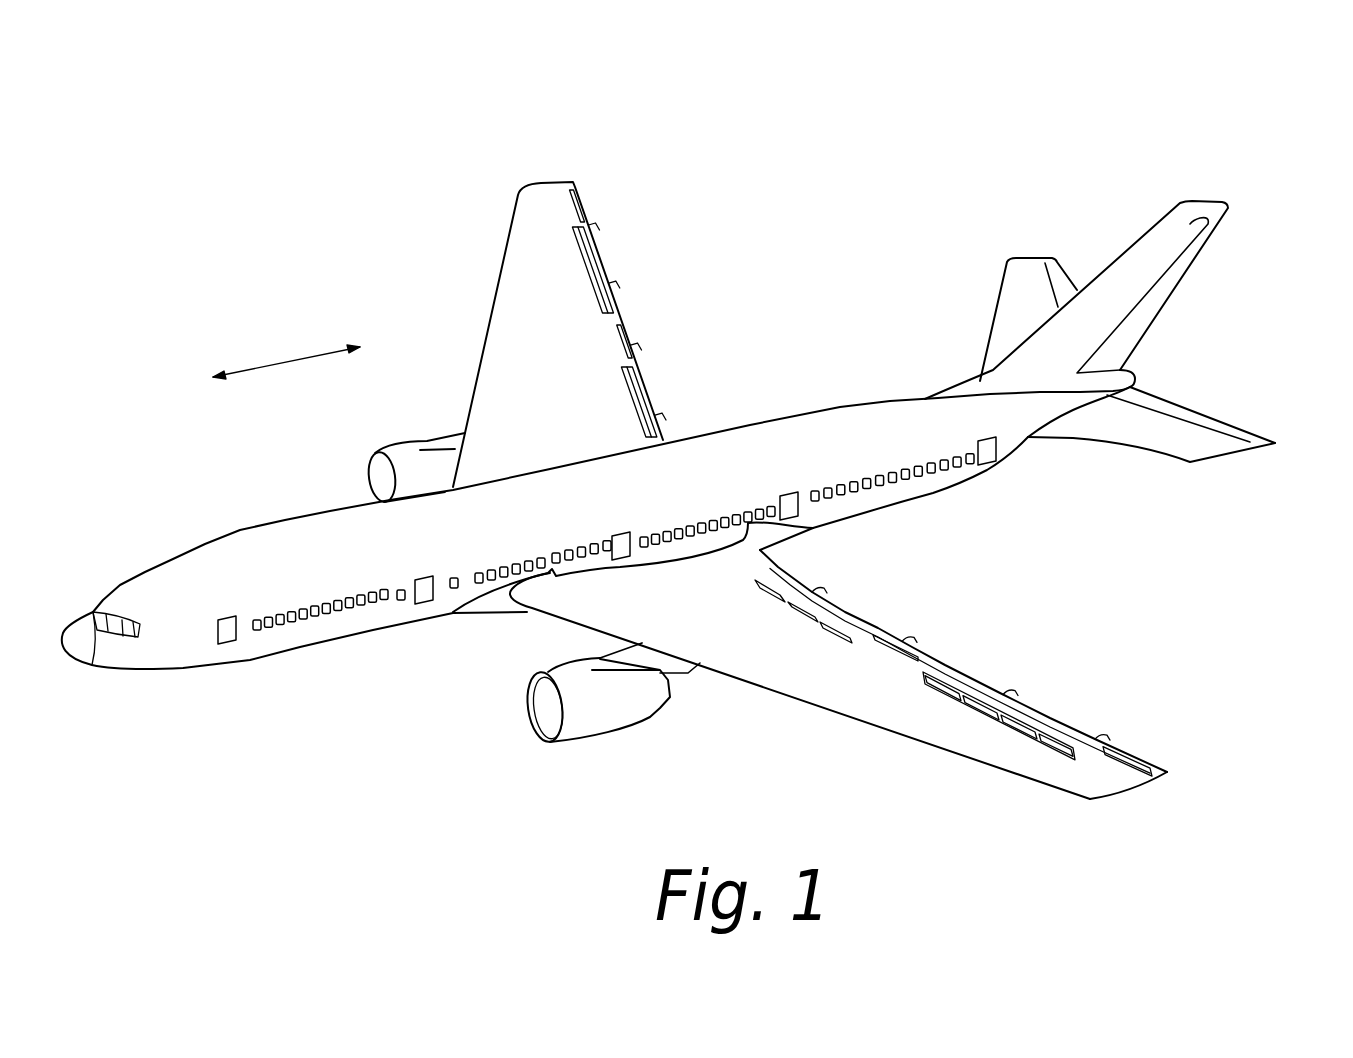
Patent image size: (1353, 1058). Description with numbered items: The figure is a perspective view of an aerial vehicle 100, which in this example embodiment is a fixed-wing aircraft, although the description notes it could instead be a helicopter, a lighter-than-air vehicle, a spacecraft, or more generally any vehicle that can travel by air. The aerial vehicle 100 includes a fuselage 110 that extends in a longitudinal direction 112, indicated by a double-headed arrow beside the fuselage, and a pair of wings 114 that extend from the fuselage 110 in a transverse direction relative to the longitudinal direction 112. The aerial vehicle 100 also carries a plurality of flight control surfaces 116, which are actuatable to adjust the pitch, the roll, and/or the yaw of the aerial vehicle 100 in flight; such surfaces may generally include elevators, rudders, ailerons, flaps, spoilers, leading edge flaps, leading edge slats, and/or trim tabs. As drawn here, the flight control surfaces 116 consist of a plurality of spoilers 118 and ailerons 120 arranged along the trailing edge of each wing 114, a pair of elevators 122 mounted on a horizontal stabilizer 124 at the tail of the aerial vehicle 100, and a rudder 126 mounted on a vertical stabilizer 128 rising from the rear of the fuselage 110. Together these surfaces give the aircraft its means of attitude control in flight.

The aerial vehicle 100 is at (1155, 148).
The fuselage 110 is at (237, 530).
The longitudinal direction 112 is at (310, 357).
The wings 114 is at (513, 242).
The flight control surfaces 116 is at (630, 303).
The spoilers 118 is at (584, 268).
The ailerons 120 is at (580, 205).
The elevators 122 is at (1057, 280).
The horizontal stabilizer 124 is at (1157, 442).
The rudder 126 is at (1177, 268).
The vertical stabilizer 128 is at (1205, 198).